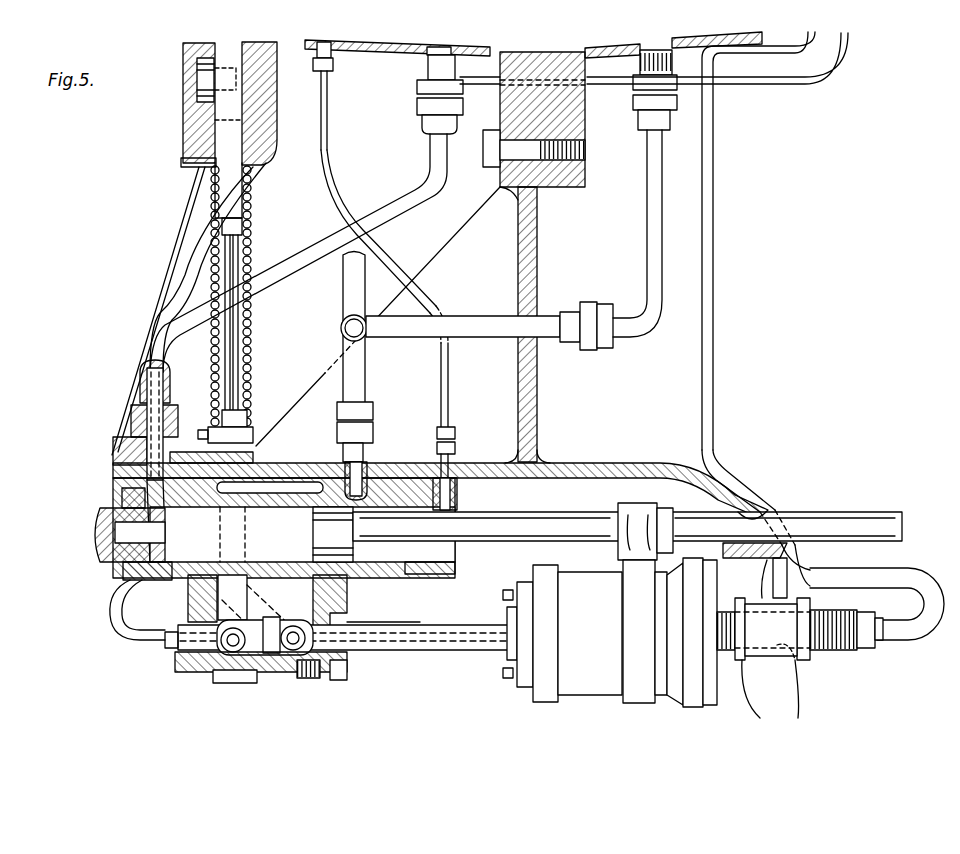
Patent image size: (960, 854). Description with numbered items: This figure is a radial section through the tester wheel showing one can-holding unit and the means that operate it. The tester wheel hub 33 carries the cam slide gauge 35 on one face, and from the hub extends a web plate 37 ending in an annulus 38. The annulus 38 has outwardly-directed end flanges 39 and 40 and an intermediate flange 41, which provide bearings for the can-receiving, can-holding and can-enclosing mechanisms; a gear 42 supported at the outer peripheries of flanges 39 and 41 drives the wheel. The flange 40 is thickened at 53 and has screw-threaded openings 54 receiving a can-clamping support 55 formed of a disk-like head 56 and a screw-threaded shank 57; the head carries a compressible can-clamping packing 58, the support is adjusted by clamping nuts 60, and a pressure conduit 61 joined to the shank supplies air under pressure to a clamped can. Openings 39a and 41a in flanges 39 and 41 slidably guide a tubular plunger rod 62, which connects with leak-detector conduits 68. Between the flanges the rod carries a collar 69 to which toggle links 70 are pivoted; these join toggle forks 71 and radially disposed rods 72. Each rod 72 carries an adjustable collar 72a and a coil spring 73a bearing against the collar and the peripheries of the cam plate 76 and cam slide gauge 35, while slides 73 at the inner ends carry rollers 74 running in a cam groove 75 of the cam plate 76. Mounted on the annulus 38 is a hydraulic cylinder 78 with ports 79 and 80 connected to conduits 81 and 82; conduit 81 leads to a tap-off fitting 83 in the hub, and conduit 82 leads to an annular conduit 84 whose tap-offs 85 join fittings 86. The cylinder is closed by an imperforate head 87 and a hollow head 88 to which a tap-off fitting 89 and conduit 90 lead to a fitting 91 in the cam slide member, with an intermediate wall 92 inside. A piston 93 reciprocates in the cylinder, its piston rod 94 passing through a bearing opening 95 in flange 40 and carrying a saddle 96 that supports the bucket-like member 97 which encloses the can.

The tester wheel hub 33 is at (578, 108).
The cam slide gauge 35 is at (268, 126).
The web plate 37 is at (540, 246).
The annulus 38 is at (588, 462).
The flange 39 is at (188, 600).
The openings 39a is at (170, 650).
The flange 40 is at (790, 548).
The flange 41 is at (340, 592).
The openings 41a is at (360, 622).
The gear 42 is at (243, 686).
The thickened portion 53 is at (760, 660).
The screw-threaded openings 54 is at (790, 660).
The can-clamping support 55 is at (726, 660).
The disk-like head 56 is at (708, 705).
The screw-threaded shank 57 is at (835, 650).
The can-clamping packing 58 is at (672, 705).
The clamping nuts 60 is at (770, 694).
The pressure conduit 61 is at (715, 356).
The plunger rods 62 is at (435, 650).
The leak-detector conduits 68 is at (262, 176).
The collar 69 is at (300, 625).
The toggle links 70 is at (265, 660).
The toggle forks 71 is at (228, 642).
The rods 72 is at (238, 386).
The adjustable collar 72a is at (248, 430).
The slides 73 is at (225, 186).
The coil spring 73a is at (250, 335).
The rollers 74 is at (205, 76).
The cam groove 75 is at (190, 128).
The cam plate 76 is at (182, 160).
The hydraulic cylinder 78 is at (215, 520).
The port 79 is at (135, 480).
The port 80 is at (372, 460).
The conduit 81 is at (290, 280).
The conduit 82 is at (358, 392).
The tap-off fitting 83 is at (418, 66).
The annular conduit 84 is at (340, 300).
The tap-offs 85 is at (498, 338).
The fittings 86 is at (672, 60).
The imperforate head 87 is at (98, 530).
The head 88 is at (458, 498).
The tap-off fitting 89 is at (456, 448).
The conduit 90 is at (440, 366).
The fitting 91 is at (310, 70).
The intermediate wall 92 is at (415, 565).
The piston 93 is at (312, 530).
The piston rod 94 is at (532, 515).
The bearing opening 95 is at (768, 512).
The saddle 96 is at (634, 515).
The bucket-like member 97 is at (562, 633).